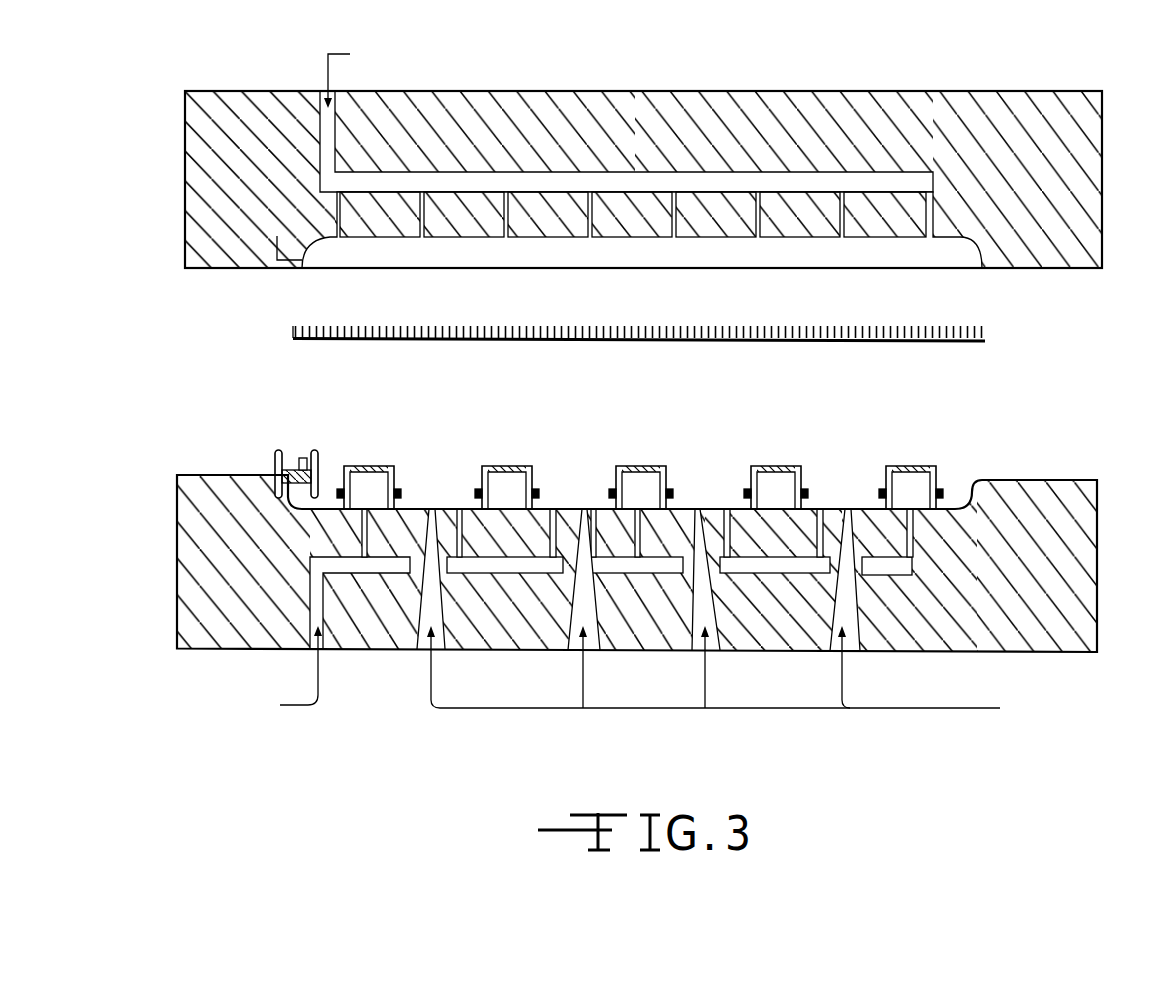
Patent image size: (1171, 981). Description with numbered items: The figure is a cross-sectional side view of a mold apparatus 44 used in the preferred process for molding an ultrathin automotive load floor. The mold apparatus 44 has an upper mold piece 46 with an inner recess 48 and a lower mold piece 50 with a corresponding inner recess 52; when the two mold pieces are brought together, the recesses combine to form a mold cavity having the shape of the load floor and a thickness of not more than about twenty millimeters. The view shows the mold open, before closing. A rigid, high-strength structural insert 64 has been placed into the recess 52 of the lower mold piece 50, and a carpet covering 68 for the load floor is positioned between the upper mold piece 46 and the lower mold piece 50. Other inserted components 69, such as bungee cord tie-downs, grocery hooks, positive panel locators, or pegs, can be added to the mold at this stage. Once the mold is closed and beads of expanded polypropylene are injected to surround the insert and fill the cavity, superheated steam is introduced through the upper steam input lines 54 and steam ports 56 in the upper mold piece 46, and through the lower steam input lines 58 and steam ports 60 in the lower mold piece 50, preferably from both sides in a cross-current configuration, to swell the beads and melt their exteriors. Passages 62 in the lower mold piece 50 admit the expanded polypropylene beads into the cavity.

The mold apparatus 44 is at (151, 66).
The upper mold piece 46 is at (607, 179).
The inner recess 48 is at (372, 242).
The lower mold piece 50 is at (624, 561).
The inner recess 52 is at (418, 508).
The upper steam input lines 54 is at (535, 178).
The steam ports 56 is at (688, 205).
The lower steam input lines 58 is at (370, 580).
The steam ports 60 is at (643, 540).
The bead fill passages 62 is at (424, 638).
The structural insert 64 is at (362, 464).
The carpet covering 68 is at (735, 332).
The inserted components 69 is at (278, 449).